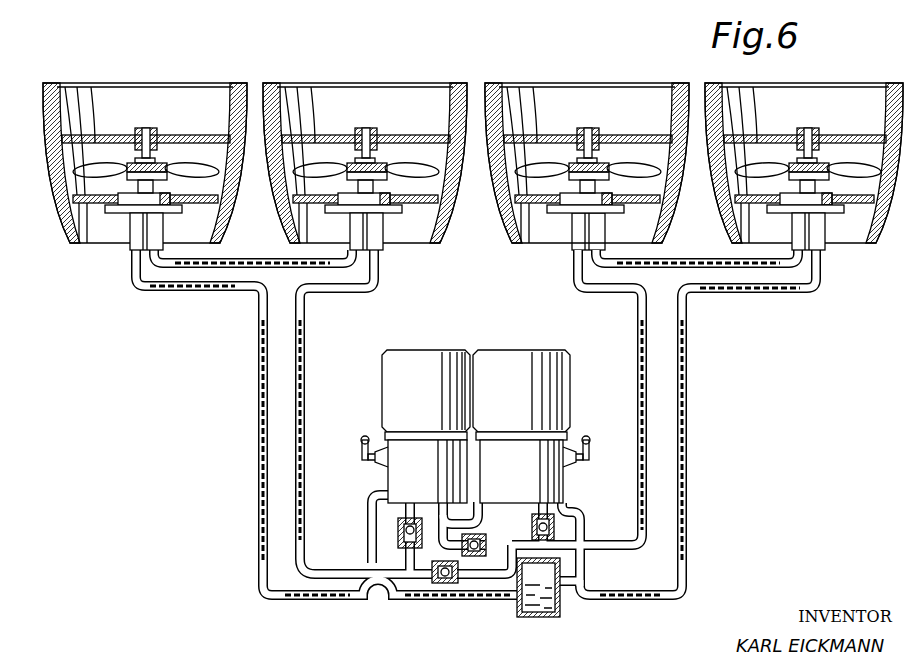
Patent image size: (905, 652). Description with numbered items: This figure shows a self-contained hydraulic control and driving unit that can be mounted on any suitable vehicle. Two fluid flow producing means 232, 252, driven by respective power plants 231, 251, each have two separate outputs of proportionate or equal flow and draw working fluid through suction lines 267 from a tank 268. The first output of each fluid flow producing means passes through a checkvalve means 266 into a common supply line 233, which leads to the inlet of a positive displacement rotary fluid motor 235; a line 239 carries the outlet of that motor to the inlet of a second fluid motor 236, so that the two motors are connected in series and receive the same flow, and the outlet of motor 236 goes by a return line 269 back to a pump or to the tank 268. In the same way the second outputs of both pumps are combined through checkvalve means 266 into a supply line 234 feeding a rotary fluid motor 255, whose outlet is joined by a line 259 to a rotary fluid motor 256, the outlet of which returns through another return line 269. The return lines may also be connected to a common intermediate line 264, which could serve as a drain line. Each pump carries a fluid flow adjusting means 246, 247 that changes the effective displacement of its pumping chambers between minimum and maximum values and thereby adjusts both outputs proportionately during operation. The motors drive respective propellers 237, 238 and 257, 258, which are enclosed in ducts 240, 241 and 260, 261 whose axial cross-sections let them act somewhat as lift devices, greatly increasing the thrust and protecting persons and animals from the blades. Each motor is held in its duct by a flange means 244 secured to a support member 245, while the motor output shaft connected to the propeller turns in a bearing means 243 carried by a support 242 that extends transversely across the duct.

The power plant 231 is at (418, 362).
The fluid flow producing means 232 is at (415, 446).
The supply line 233 is at (305, 398).
The supply line 234 is at (640, 395).
The positive displacement rotary fluid motor 235 is at (365, 240).
The positive displacement rotary fluid motor 236 is at (133, 262).
The propeller 237 is at (410, 165).
The propeller 238 is at (186, 165).
The line 239 is at (262, 262).
The duct 240 is at (268, 100).
The duct 241 is at (230, 188).
The support 242 is at (135, 138).
The bearing means 243 is at (148, 128).
The flange means 244 is at (125, 214).
The support member 245 is at (178, 211).
The fluid flow adjusting means 246 is at (361, 440).
The fluid flow adjusting means 247 is at (590, 440).
The power plant 251 is at (503, 362).
The fluid flow producing means 252 is at (505, 447).
The positive displacement rotary fluid motor 255 is at (580, 240).
The positive displacement rotary fluid motor 256 is at (820, 252).
The propeller 257 is at (548, 165).
The propeller 258 is at (853, 165).
The line 259 is at (725, 292).
The duct 260 is at (457, 176).
The duct 261 is at (720, 202).
The common intermediate line 264 is at (470, 512).
The checkvalve means 266 is at (398, 533).
The suction line 267 is at (583, 578).
The tank 268 is at (558, 603).
The return line 269 is at (260, 400).